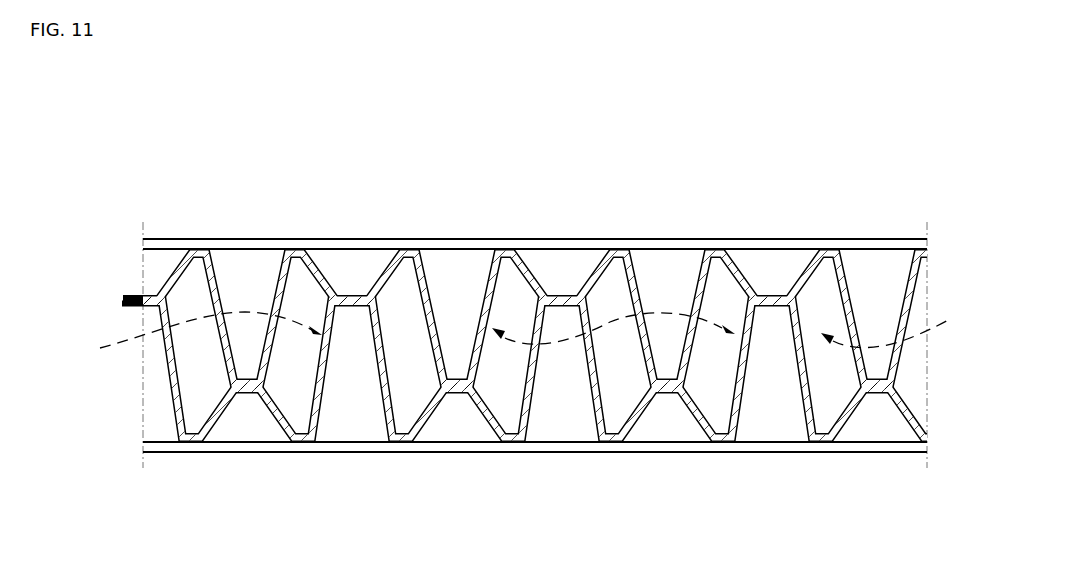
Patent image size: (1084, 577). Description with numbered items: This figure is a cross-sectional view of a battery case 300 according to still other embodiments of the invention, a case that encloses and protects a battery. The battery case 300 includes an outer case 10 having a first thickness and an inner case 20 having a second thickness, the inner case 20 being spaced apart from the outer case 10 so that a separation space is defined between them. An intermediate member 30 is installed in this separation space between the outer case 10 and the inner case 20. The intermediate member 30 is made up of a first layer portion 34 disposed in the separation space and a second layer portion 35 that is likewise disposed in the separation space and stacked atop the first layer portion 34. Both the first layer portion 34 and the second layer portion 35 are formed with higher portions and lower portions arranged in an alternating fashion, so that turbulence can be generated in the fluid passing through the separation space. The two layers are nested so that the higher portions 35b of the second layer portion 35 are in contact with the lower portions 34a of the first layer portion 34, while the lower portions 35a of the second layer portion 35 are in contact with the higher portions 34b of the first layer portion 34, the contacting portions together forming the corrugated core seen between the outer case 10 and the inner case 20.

The battery case 300 is at (178, 153).
The outer case 10 is at (498, 238).
The inner case 20 is at (500, 457).
The intermediate member 30 is at (75, 277).
The second layer portion 35 is at (159, 277).
The first layer portion 34 is at (167, 381).
The lower portions of the second layer portion 35a is at (758, 306).
The higher portions of the second layer portion 35b is at (650, 388).
The lower portions of the first layer portion 34a is at (684, 390).
The higher portions of the first layer portion 34b is at (787, 296).